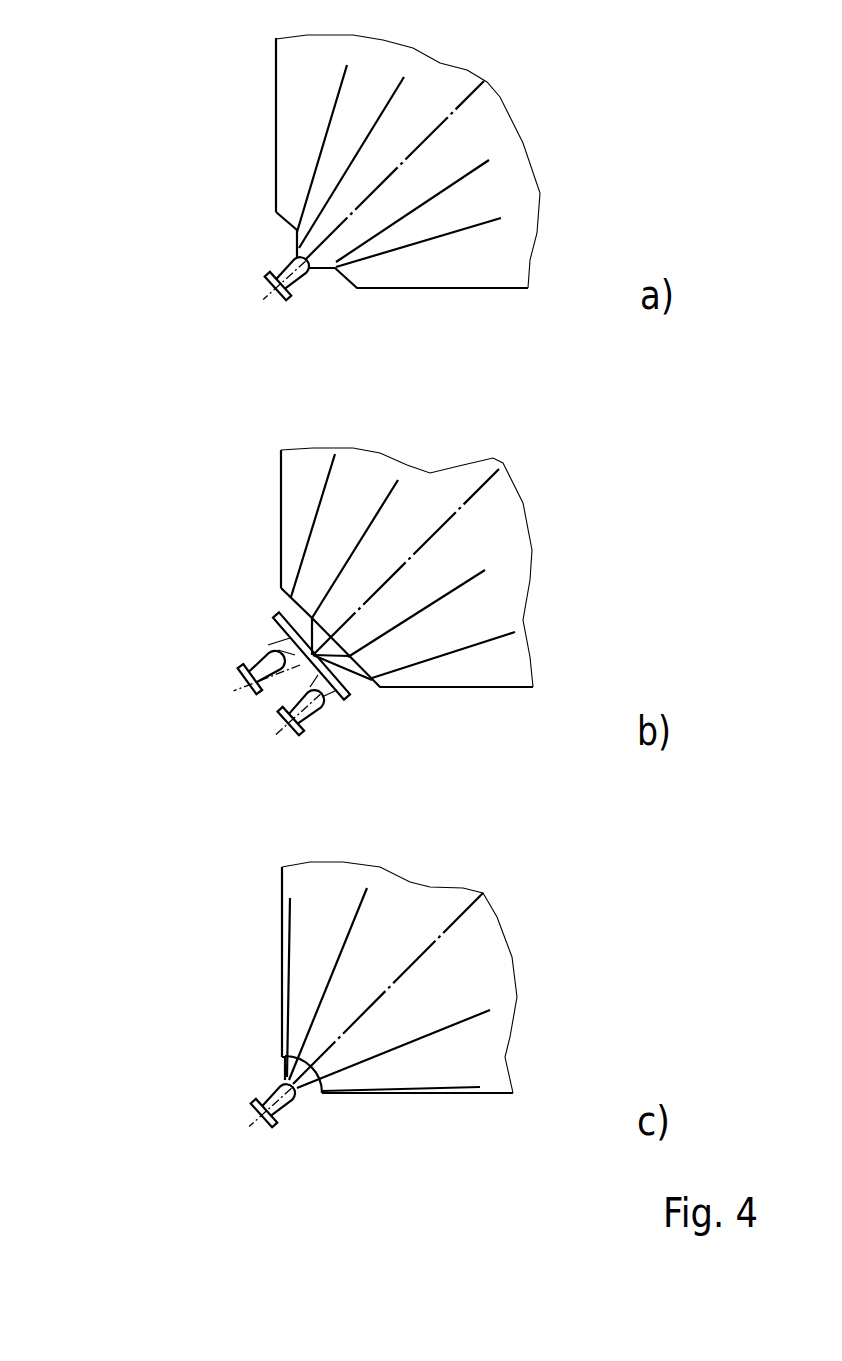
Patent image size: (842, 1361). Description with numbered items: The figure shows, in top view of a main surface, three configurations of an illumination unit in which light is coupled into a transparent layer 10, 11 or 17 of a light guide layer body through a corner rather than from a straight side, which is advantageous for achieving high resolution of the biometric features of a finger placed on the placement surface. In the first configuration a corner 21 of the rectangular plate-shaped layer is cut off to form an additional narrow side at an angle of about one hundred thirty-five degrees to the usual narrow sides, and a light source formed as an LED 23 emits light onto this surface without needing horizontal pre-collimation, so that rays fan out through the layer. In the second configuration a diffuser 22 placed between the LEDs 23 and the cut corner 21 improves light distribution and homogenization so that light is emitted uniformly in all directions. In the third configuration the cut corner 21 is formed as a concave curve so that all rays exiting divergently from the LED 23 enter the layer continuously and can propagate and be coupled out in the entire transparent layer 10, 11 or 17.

The transparent layer 10 is at (303, 554).
The transparent layer 11 is at (303, 554).
The transparent layer 17 is at (288, 65).
The cut-off corner 21 is at (277, 213).
The diffuser 22 is at (273, 621).
The LED 23 is at (262, 280).